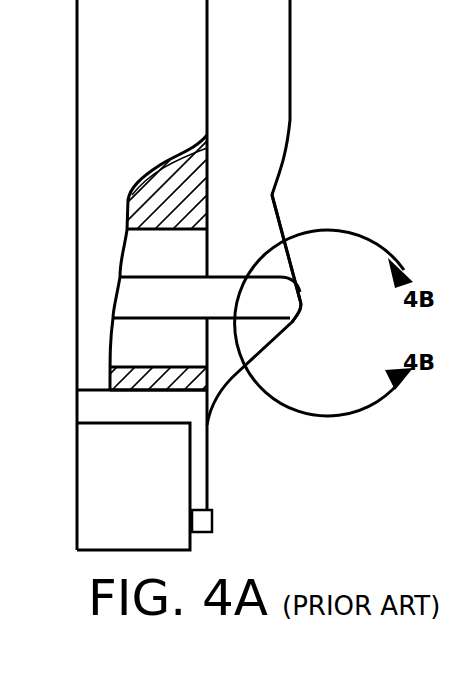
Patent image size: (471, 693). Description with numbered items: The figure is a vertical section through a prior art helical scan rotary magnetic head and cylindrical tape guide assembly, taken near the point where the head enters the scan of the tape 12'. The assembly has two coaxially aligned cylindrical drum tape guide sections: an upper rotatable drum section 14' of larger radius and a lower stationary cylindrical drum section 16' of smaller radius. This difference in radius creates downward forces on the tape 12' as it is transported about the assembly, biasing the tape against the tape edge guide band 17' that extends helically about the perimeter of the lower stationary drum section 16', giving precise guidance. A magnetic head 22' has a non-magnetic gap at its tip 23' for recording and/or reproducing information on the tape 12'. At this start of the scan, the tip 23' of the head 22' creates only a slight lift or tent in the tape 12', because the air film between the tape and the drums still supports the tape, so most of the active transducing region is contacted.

The tape 12' is at (223, 275).
The upper rotatable drum section 14' is at (277, 195).
The lower stationary cylindrical drum section 16' is at (204, 470).
The tape edge guide band 17' is at (246, 523).
The magnetic head 22' is at (202, 263).
The tip 23' is at (323, 263).